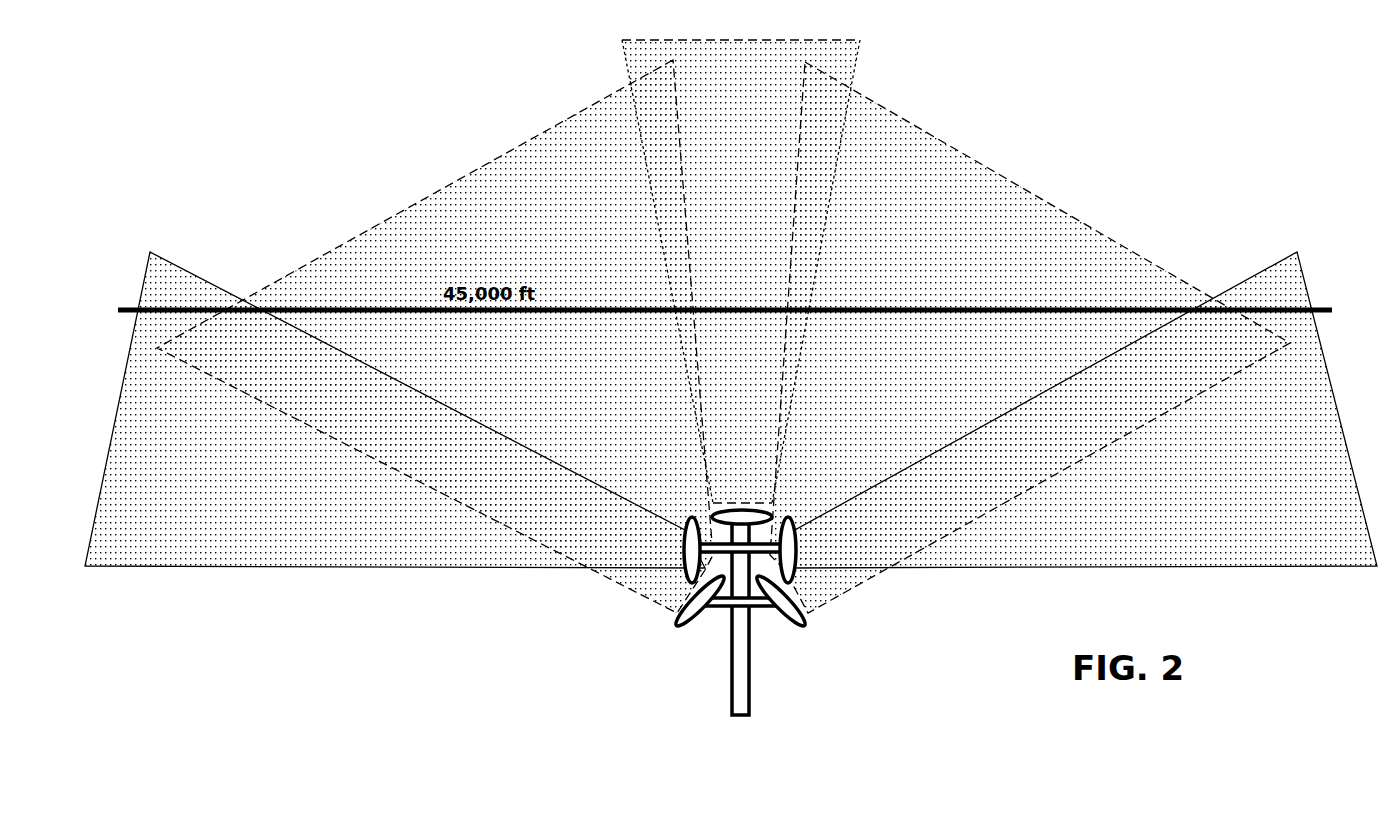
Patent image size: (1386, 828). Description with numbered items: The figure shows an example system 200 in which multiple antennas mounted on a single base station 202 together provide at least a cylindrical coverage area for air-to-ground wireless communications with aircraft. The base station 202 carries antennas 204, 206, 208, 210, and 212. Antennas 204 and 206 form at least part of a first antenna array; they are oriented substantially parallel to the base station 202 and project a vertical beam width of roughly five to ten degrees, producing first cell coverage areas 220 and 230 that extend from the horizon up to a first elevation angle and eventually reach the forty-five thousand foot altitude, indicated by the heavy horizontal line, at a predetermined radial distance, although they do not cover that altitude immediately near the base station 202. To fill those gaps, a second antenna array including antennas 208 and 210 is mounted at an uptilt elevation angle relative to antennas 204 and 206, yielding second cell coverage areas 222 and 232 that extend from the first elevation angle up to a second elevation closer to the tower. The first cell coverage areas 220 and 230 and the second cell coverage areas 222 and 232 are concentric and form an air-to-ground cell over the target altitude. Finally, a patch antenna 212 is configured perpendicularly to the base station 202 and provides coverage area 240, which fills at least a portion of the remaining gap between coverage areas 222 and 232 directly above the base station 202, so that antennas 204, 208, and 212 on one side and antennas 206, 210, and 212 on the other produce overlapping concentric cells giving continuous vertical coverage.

The system 200 is at (1155, 97).
The base station 202 is at (750, 690).
The antenna 204 is at (797, 524).
The antenna 206 is at (685, 528).
The antenna 208 is at (795, 588).
The antenna 210 is at (685, 588).
The patch antenna 212 is at (743, 510).
The first cell coverage area 220 is at (1280, 262).
The second cell coverage area 222 is at (975, 150).
The first cell coverage area 230 is at (187, 272).
The second cell coverage area 232 is at (505, 155).
The coverage area 240 is at (810, 40).